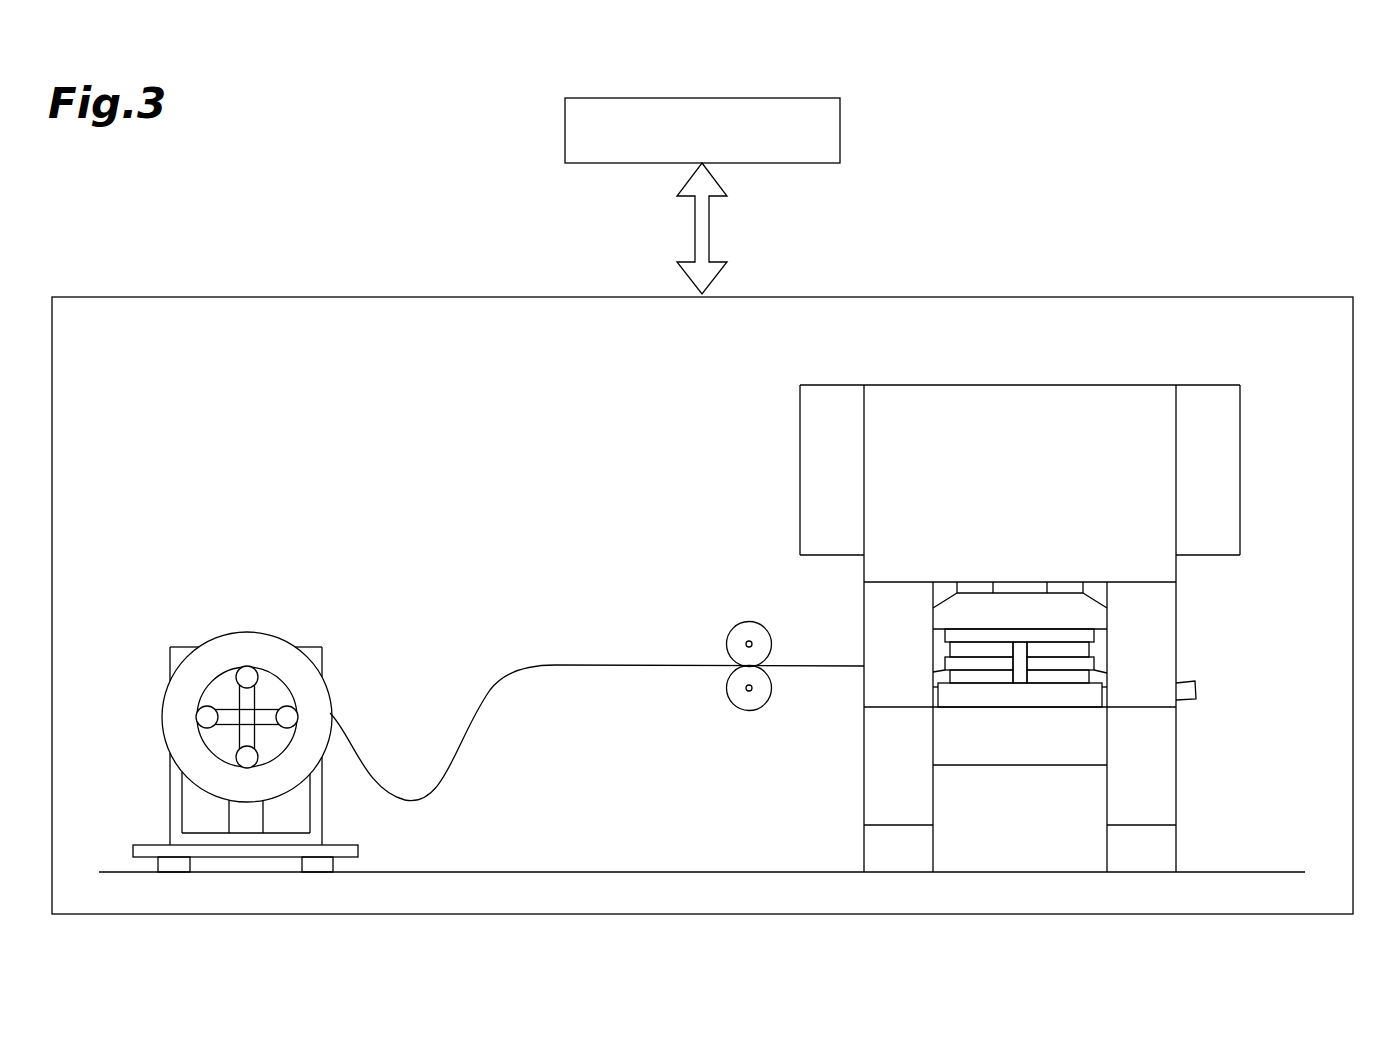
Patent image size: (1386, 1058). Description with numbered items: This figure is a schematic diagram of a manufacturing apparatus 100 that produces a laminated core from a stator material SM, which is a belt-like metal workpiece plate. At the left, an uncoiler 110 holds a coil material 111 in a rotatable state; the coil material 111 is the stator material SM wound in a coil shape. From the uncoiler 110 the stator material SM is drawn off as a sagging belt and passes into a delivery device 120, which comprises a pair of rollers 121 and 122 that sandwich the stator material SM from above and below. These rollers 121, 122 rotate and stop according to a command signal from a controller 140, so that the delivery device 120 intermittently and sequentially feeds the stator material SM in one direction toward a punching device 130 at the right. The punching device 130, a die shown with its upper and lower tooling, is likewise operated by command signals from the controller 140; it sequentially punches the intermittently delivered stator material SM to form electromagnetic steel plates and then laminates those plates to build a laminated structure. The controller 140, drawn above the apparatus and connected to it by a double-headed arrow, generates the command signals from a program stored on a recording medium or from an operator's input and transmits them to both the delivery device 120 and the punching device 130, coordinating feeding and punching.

The manufacturing apparatus 100 is at (1247, 221).
The uncoiler 110 is at (186, 645).
The coil material 111 is at (243, 632).
The delivery device 120 is at (759, 635).
The roller 121 is at (763, 622).
The roller 122 is at (770, 701).
The punching device 130 is at (1245, 372).
The controller 140 is at (843, 128).
The stator material SM is at (352, 745).